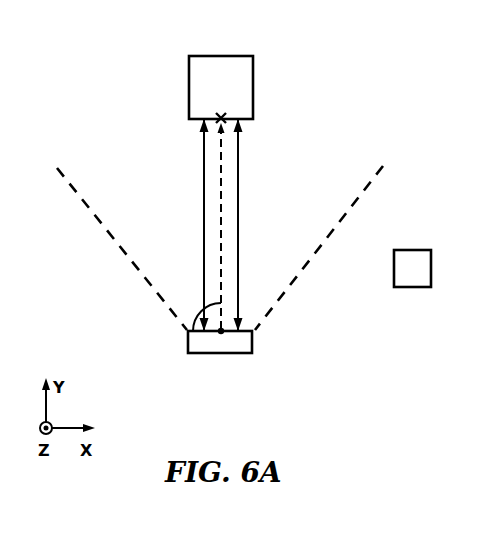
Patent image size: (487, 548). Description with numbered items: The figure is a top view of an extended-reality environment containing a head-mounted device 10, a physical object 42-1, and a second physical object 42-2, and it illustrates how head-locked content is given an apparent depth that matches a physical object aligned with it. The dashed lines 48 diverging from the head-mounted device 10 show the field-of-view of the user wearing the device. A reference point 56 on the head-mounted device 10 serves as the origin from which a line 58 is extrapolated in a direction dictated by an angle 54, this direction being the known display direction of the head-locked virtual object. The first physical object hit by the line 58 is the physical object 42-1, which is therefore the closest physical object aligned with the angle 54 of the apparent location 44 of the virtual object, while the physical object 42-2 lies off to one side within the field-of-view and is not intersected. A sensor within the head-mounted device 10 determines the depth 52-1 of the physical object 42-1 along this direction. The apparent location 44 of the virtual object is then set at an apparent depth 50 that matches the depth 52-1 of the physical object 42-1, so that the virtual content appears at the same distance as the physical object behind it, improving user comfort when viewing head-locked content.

The head-mounted device 10 is at (252, 341).
The physical object 42-1 is at (253, 67).
The physical object 42-2 is at (413, 250).
The apparent location 44 is at (224, 114).
The dashed lines 48 is at (96, 213).
The apparent depth 50 is at (204, 212).
The depth 52-1 is at (238, 240).
The angle 54 is at (200, 320).
The reference point 56 is at (221, 334).
The line 58 is at (221, 173).